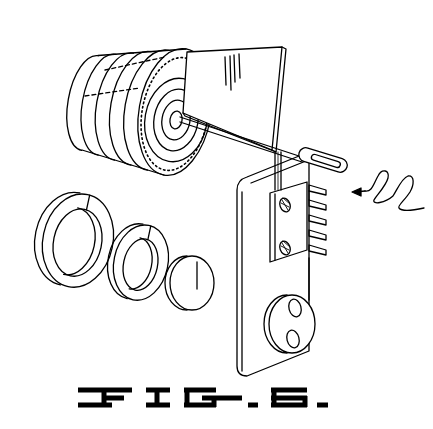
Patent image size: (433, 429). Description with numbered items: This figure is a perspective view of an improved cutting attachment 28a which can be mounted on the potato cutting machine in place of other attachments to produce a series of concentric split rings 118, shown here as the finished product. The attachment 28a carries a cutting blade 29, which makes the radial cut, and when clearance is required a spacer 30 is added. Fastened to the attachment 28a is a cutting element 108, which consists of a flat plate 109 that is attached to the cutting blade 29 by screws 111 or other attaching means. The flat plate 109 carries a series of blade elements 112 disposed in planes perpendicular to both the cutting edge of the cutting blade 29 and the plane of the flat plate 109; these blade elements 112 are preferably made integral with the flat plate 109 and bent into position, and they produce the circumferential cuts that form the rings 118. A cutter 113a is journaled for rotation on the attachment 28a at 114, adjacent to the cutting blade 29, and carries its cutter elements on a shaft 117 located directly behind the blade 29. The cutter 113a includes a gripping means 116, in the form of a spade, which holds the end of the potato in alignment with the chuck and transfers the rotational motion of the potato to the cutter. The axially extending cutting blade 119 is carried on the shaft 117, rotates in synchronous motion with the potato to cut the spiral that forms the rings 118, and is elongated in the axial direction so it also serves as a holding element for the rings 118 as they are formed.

The attachment 28a is at (314, 291).
The cutting blade 29 is at (311, 262).
The spacer 30 is at (308, 326).
The cutting element 108 is at (322, 236).
The flat plate 109 is at (279, 204).
The screws 111 is at (280, 211).
The blade elements 112 is at (316, 194).
The cutter 113a is at (283, 118).
The journal 114 is at (315, 149).
The gripping means 116 is at (346, 172).
The shaft 117 is at (300, 150).
The concentric split rings 118 is at (123, 293).
The cutting blade 119 is at (284, 63).